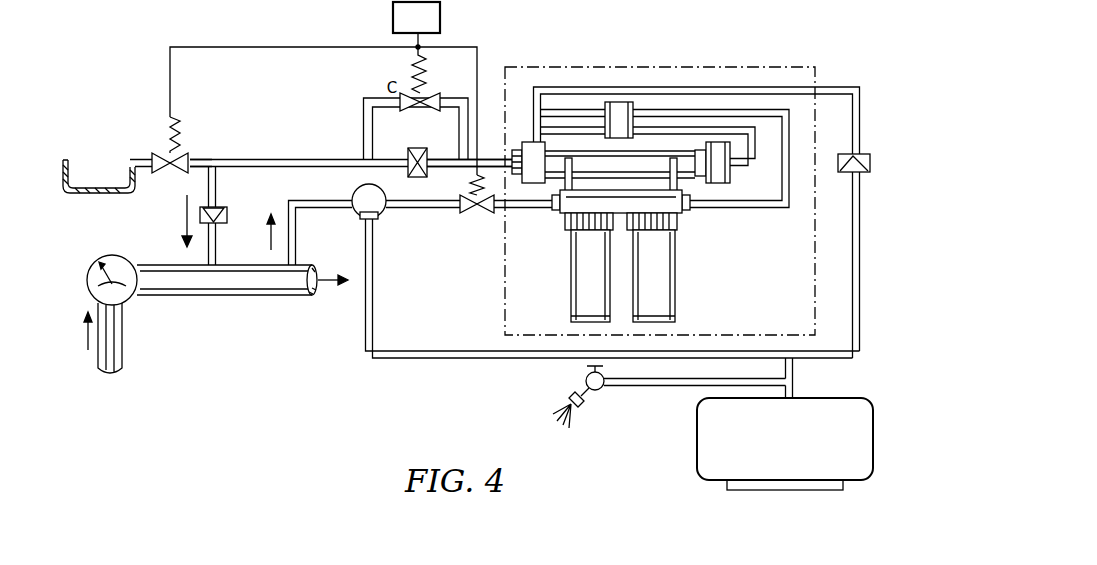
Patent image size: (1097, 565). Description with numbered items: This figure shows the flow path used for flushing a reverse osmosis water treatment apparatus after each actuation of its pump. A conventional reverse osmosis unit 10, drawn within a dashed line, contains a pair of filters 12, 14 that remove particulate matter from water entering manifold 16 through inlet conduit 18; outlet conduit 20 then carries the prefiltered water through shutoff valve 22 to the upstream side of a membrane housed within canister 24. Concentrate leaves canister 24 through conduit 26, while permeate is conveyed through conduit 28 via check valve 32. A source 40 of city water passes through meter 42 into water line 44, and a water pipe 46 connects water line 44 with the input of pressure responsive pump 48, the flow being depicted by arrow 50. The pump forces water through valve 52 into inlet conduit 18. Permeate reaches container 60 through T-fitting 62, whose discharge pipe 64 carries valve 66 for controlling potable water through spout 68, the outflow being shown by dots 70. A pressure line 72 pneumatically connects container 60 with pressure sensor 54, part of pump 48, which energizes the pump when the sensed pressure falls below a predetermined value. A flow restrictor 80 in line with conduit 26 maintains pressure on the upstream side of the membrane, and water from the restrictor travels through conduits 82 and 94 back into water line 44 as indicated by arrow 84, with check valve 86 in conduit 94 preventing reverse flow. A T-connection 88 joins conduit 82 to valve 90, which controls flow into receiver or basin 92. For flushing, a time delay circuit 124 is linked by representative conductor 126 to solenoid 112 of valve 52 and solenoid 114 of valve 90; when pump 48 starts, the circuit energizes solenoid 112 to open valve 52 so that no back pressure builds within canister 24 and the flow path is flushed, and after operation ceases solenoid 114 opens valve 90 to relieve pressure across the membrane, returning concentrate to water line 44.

The reverse osmosis unit 10 is at (506, 288).
The filter 12 is at (675, 284).
The filter 14 is at (570, 290).
The manifold 16 is at (690, 216).
The inlet conduit 18 is at (540, 210).
The outlet conduit 20 is at (764, 210).
The shutoff valve 22 is at (636, 136).
The canister 24 is at (606, 152).
The conduit 26 is at (488, 158).
The conduit 28 is at (848, 100).
The check valve 32 is at (843, 172).
The source of city water 40 is at (90, 337).
The meter 42 is at (90, 266).
The water line 44 is at (160, 296).
The water pipe 46 is at (303, 190).
The pressure responsive pump 48 is at (353, 197).
The arrow 50 is at (268, 226).
The valve 52 is at (463, 216).
The pressure sensor 54 is at (361, 222).
The container 60 is at (785, 444).
The T-fitting 62 is at (796, 392).
The discharge pipe 64 is at (622, 386).
The valve 66 is at (586, 380).
The spout 68 is at (582, 405).
The dots 70 is at (566, 403).
The pressure line 72 is at (440, 351).
The flow restrictor 80 is at (410, 150).
The conduit 82 is at (296, 158).
The arrow 84 is at (186, 218).
The check valve 86 is at (228, 222).
The T-connection 88 is at (210, 158).
The valve 90 is at (156, 156).
The receiver or basin 92 is at (67, 160).
The conduit 94 is at (217, 176).
The solenoid 112 is at (470, 180).
The solenoid 114 is at (170, 117).
The time delay circuit 124 is at (393, 10).
The conductor 126 is at (284, 46).